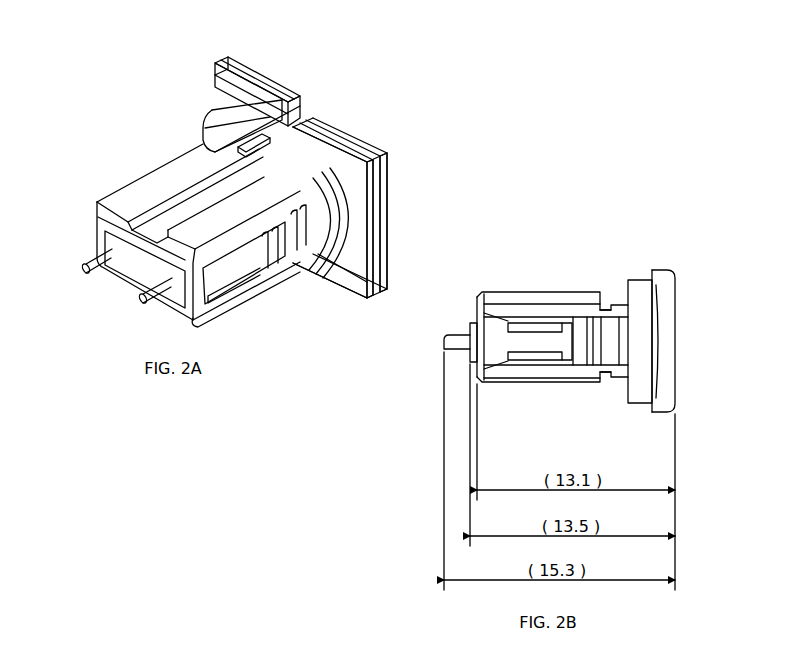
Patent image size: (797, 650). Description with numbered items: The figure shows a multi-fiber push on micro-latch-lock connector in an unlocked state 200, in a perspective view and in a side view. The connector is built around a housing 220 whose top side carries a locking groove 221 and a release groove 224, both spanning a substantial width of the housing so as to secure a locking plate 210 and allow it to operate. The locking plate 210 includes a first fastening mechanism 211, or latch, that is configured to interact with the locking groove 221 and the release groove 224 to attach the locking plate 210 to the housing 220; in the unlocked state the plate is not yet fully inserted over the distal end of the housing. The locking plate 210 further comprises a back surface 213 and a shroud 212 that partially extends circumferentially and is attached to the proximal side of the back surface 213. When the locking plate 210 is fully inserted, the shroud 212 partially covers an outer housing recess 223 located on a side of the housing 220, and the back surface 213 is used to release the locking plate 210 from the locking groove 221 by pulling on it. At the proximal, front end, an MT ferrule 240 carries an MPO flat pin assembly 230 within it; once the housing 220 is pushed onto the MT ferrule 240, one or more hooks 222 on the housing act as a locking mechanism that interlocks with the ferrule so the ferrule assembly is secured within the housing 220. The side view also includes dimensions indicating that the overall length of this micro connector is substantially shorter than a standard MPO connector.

In FIG. 2A, the unlocked state 200 is at (425, 110).
In FIG. 2B, the unlocked state 200 is at (697, 288).
In FIG. 2A, the locking plate 210 is at (386, 198).
In FIG. 2B, the locking plate 210 is at (678, 372).
In FIG. 2A, the first fastening mechanism 211 is at (304, 120).
In FIG. 2A, the shroud 212 is at (353, 250).
In FIG. 2B, the shroud 212 is at (663, 310).
In FIG. 2A, the back surface 213 is at (388, 257).
In FIG. 2A, the housing 220 is at (150, 167).
In FIG. 2B, the housing 220 is at (540, 290).
In FIG. 2A, the locking groove 221 is at (207, 139).
In FIG. 2B, the locking groove 221 is at (607, 302).
In FIG. 2A, the hook 222 is at (214, 292).
In FIG. 2A, the outer housing recess 223 is at (300, 256).
In FIG. 2A, the release groove 224 is at (253, 147).
In FIG. 2A, the MPO flat pin assembly 230 is at (84, 252).
In FIG. 2A, the MT ferrule 240 is at (123, 275).
In FIG. 2B, the MT ferrule 240 is at (441, 345).